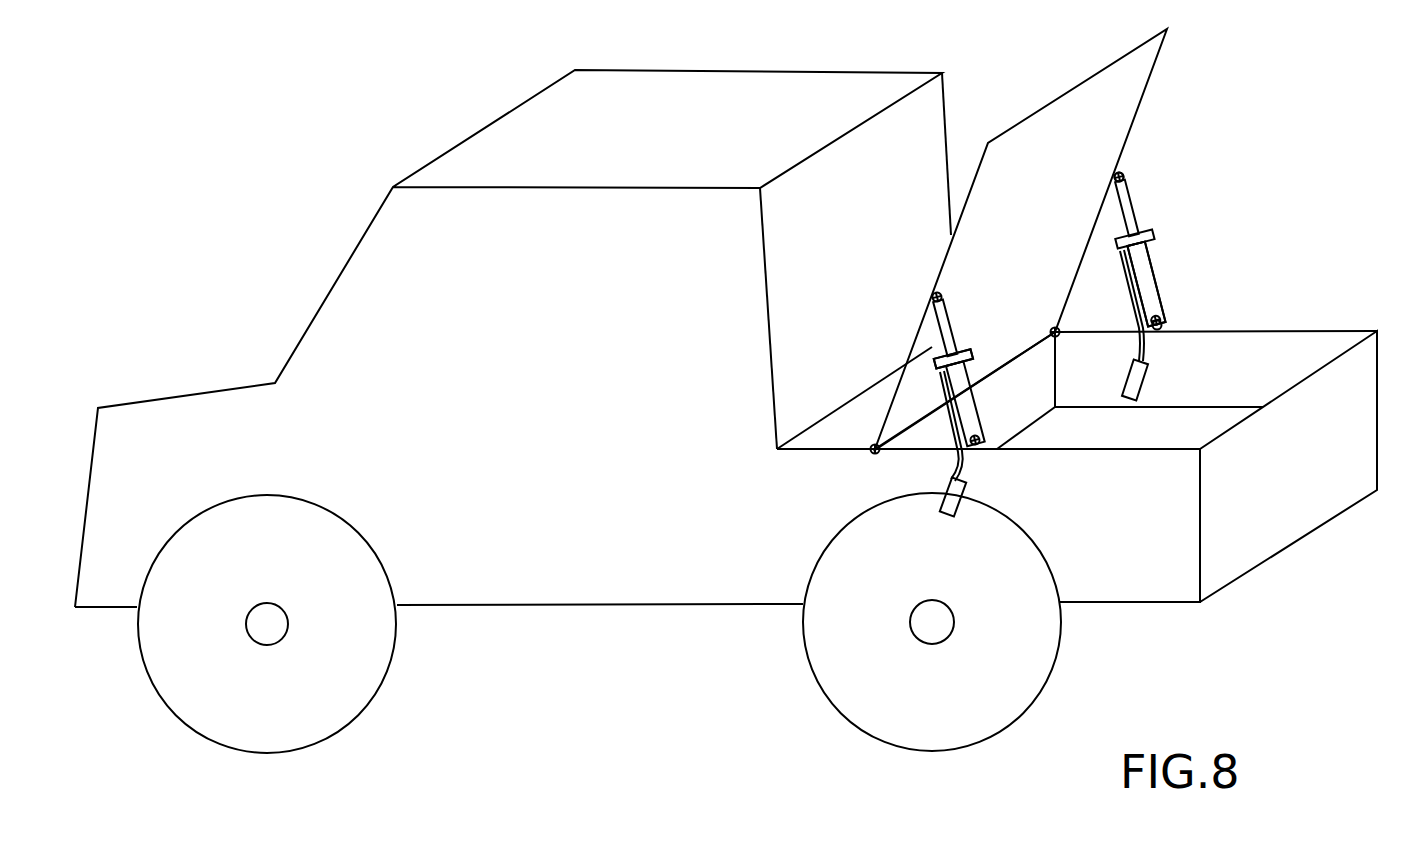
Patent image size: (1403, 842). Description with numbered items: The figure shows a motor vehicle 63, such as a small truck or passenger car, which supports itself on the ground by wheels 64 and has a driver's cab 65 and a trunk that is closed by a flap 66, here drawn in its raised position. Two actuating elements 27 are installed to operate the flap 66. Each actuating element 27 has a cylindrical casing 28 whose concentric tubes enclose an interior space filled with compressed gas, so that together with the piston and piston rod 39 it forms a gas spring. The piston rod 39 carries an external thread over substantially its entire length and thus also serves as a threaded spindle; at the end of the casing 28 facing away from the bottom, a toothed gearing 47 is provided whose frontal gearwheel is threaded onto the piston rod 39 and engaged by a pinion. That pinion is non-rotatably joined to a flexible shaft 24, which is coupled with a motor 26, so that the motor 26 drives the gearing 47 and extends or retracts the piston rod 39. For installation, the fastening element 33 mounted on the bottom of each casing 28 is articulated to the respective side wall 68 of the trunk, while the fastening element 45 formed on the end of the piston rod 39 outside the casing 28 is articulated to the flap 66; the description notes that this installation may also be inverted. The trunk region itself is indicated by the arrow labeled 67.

The flexible shaft 24 is at (1132, 295).
The motor 26 is at (1128, 375).
The actuating element 27 is at (1165, 274).
The cylindrical casing 28 is at (980, 408).
The fastening element 33 is at (1165, 322).
The piston rod 39 is at (948, 322).
The fastening element 45 is at (1124, 176).
The toothed gearing 47 is at (933, 367).
The motor vehicle 63 is at (590, 612).
The wheels 64 is at (360, 673).
The driver's cab 65 is at (579, 283).
The flap 66 is at (1027, 167).
The cargo bed 67 is at (1202, 426).
The side wall 68 is at (1165, 389).